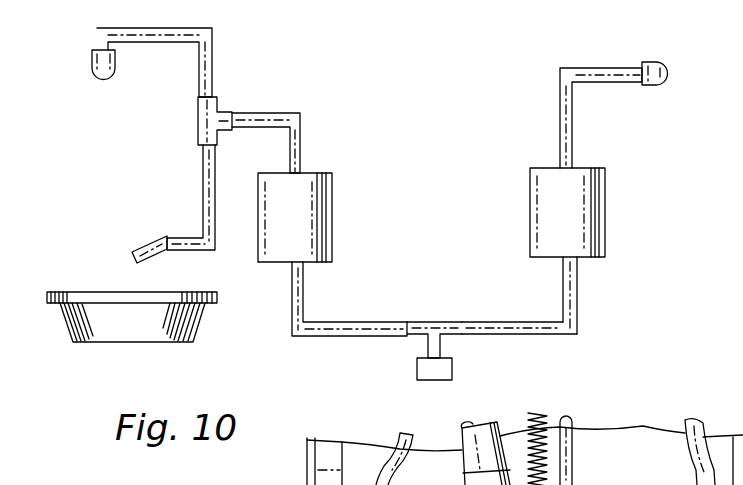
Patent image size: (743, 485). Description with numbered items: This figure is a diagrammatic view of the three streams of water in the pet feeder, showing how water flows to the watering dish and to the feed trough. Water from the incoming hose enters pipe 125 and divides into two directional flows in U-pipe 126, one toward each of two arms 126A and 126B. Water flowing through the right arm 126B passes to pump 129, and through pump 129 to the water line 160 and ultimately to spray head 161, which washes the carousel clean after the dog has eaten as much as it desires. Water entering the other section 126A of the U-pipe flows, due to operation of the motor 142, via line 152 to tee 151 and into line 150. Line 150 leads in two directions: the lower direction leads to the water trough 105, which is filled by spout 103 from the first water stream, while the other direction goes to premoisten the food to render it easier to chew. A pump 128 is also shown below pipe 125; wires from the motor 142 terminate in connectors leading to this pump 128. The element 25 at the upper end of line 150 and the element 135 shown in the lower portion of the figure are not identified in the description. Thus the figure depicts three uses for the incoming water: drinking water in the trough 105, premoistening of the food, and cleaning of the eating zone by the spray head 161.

The fitting 25 is at (98, 81).
The spout 103 is at (150, 240).
The water trough 105 is at (198, 325).
The pipe 125 is at (427, 345).
The U-pipe 126 is at (504, 320).
The arm of U-pipe 126A is at (305, 280).
The right arm of U-pipe 126B is at (579, 281).
The pump 128 is at (453, 362).
The pump 129 is at (606, 197).
The housing 135 is at (463, 454).
The motor 142 is at (334, 191).
The line 150 is at (214, 59).
The tee 151 is at (182, 121).
The line 152 is at (268, 113).
The water line 160 is at (561, 99).
The spray head 161 is at (650, 62).